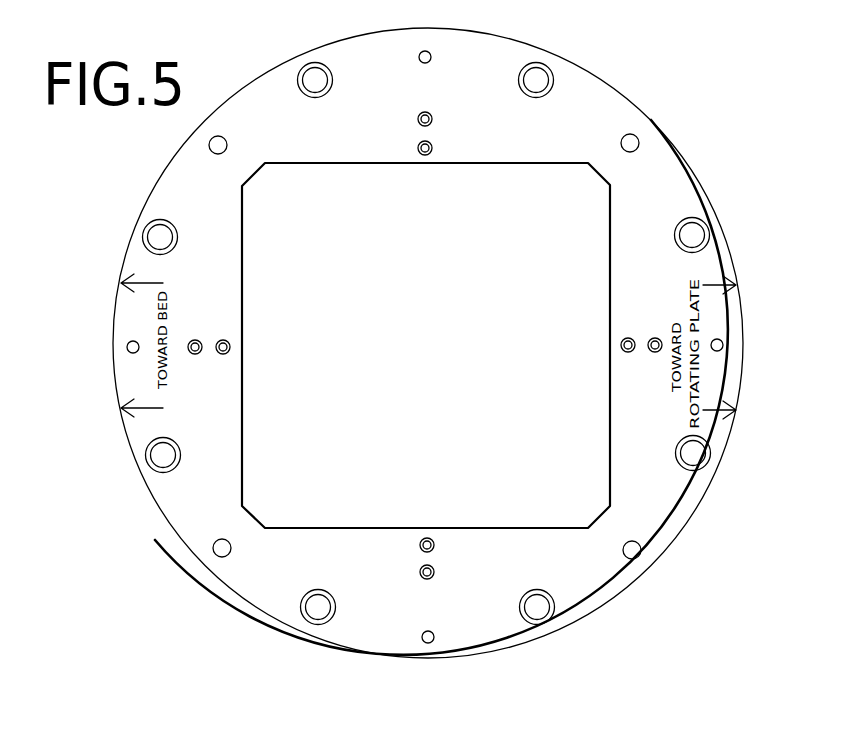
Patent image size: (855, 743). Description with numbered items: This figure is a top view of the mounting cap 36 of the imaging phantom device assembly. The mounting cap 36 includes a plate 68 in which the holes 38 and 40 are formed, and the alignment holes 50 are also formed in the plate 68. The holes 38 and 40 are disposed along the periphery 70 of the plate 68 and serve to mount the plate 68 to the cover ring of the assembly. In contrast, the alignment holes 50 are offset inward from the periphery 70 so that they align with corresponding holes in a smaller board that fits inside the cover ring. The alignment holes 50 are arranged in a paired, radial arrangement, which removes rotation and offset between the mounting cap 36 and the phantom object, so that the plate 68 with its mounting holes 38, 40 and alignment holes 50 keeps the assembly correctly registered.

The mounting cap 36 is at (566, 53).
The holes 38 is at (310, 63).
The holes 40 is at (210, 140).
The alignment holes 50 is at (225, 340).
The plate 68 is at (511, 316).
The periphery 70 is at (695, 513).